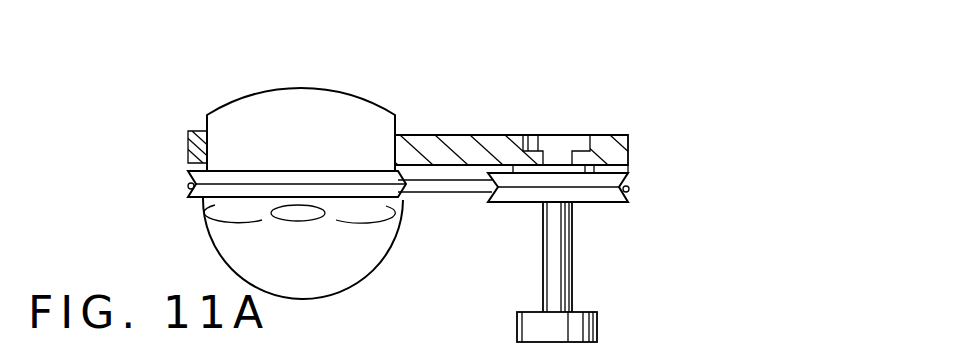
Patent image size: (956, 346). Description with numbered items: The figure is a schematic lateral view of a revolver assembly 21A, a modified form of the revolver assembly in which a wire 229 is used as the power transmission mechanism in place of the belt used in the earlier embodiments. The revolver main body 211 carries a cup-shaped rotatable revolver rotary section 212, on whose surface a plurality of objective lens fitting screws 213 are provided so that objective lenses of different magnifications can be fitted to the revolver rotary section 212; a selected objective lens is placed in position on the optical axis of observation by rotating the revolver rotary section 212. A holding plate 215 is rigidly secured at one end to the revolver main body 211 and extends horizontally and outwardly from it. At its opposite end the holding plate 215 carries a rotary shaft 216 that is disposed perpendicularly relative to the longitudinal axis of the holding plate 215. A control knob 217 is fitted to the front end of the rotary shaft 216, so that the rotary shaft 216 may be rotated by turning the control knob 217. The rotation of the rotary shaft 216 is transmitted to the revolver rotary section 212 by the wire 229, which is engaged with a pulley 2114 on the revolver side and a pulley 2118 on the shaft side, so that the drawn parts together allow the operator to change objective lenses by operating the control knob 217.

The revolver assembly 21A is at (314, 72).
The revolver main body 211 is at (365, 123).
The revolver rotary section 212 is at (247, 203).
The objective lens fitting screw 213 is at (298, 215).
The pulley 2114 is at (192, 188).
The holding plate 215 is at (508, 143).
The rotary shaft 216 is at (560, 242).
The control knob 217 is at (598, 325).
The pulley 2118 is at (623, 180).
The wire 229 is at (452, 195).